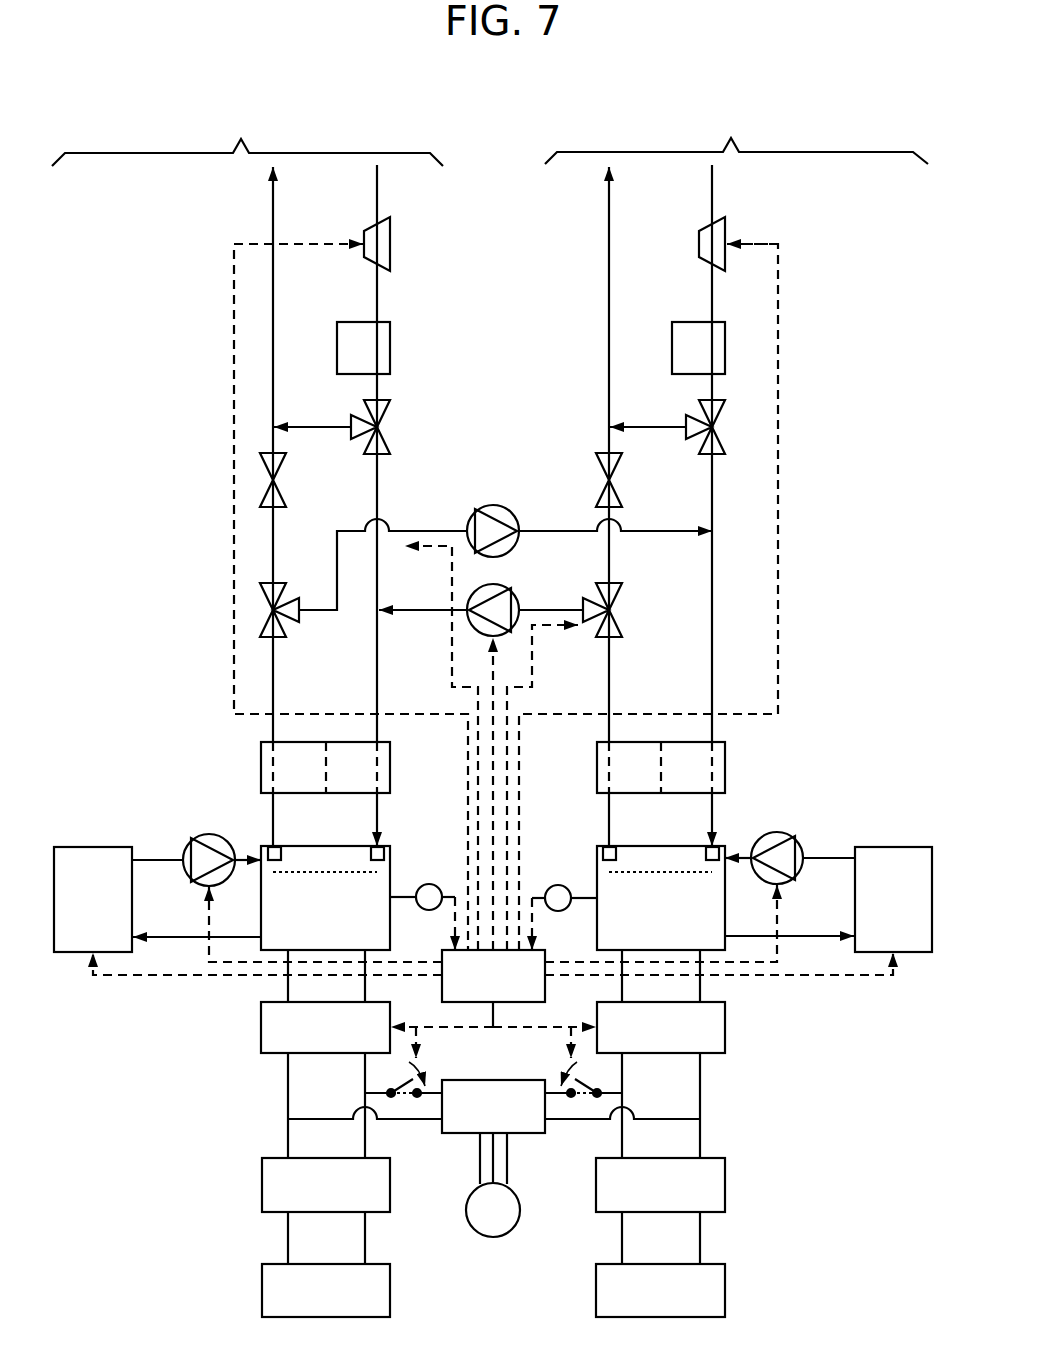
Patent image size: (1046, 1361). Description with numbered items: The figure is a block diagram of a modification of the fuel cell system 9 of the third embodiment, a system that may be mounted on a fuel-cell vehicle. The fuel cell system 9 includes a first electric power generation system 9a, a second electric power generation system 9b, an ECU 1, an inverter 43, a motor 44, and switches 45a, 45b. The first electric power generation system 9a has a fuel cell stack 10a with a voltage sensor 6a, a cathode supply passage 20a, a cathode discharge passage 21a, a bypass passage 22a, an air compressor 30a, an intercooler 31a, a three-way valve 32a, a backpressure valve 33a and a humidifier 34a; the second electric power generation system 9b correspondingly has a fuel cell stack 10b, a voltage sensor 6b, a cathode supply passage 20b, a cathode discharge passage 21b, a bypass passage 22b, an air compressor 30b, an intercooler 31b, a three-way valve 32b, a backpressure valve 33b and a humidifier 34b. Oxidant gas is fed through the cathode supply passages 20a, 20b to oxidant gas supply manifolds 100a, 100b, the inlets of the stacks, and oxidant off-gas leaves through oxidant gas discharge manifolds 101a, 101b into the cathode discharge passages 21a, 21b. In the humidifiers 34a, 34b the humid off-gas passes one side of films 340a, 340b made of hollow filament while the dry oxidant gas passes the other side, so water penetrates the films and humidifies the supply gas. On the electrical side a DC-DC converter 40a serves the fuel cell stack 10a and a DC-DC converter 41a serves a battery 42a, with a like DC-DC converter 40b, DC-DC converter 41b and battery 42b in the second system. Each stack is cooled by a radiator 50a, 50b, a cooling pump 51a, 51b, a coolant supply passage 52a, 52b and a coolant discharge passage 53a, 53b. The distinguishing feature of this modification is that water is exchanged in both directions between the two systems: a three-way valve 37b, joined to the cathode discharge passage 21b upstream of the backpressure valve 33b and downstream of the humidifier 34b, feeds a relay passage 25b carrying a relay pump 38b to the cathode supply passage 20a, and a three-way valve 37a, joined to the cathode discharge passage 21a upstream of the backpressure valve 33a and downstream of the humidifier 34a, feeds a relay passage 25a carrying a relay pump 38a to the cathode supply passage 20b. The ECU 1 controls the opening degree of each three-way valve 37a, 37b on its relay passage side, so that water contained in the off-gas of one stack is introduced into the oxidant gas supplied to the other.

The ECU 1 is at (546, 953).
The fuel cell system 9 is at (845, 140).
The first electric power generation system 9a is at (247, 141).
The second electric power generation system 9b is at (736, 139).
The fuel cell stack 10a is at (391, 851).
The fuel cell stack 10b is at (726, 849).
The voltage sensor 6a is at (434, 884).
The voltage sensor 6b is at (562, 886).
The cathode supply passage 20a is at (378, 696).
The cathode supply passage 20b is at (713, 696).
The cathode discharge passage 21a is at (274, 671).
The cathode discharge passage 21b is at (610, 671).
The bypass passage 22a is at (318, 427).
The bypass passage 22b is at (655, 427).
The relay passage 25a is at (548, 531).
The relay passage 25b is at (403, 610).
The air compressor 30a is at (390, 228).
The air compressor 30b is at (727, 228).
The intercooler 31a is at (390, 330).
The intercooler 31b is at (727, 330).
The three-way valve 32a is at (390, 407).
The three-way valve 32b is at (727, 407).
The backpressure valve 33a is at (287, 467).
The backpressure valve 33b is at (623, 467).
The humidifier 34a is at (390, 749).
The humidifier 34b is at (726, 749).
The film 340a is at (326, 762).
The film 340b is at (661, 762).
The three-way valve 37a is at (287, 588).
The three-way valve 37b is at (623, 588).
The relay pump 38a is at (511, 512).
The relay pump 38b is at (511, 591).
The DC-DC converter (FDC) 40a is at (391, 1008).
The DC-DC converter (FDC) 40b is at (726, 1008).
The DC-DC converter (BDC) 41a is at (391, 1165).
The DC-DC converter (BDC) 41b is at (726, 1165).
The battery 42a is at (391, 1271).
The battery 42b is at (726, 1271).
The inverter (INV) 43 is at (519, 1080).
The motor 44 is at (514, 1193).
The switch 45a is at (403, 1077).
The switch 45b is at (583, 1076).
The radiator 50a is at (104, 846).
The radiator 50b is at (910, 846).
The cooling pump 51a is at (228, 842).
The cooling pump 51b is at (795, 840).
The coolant supply passage 52a is at (150, 860).
The coolant supply passage 52b is at (832, 858).
The coolant discharge passage 53a is at (162, 937).
The coolant discharge passage 53b is at (808, 936).
The oxidant gas supply manifold 100a is at (385, 846).
The oxidant gas supply manifold 100b is at (720, 846).
The oxidant gas discharge manifold 101a is at (282, 847).
The oxidant gas discharge manifold 101b is at (616, 847).